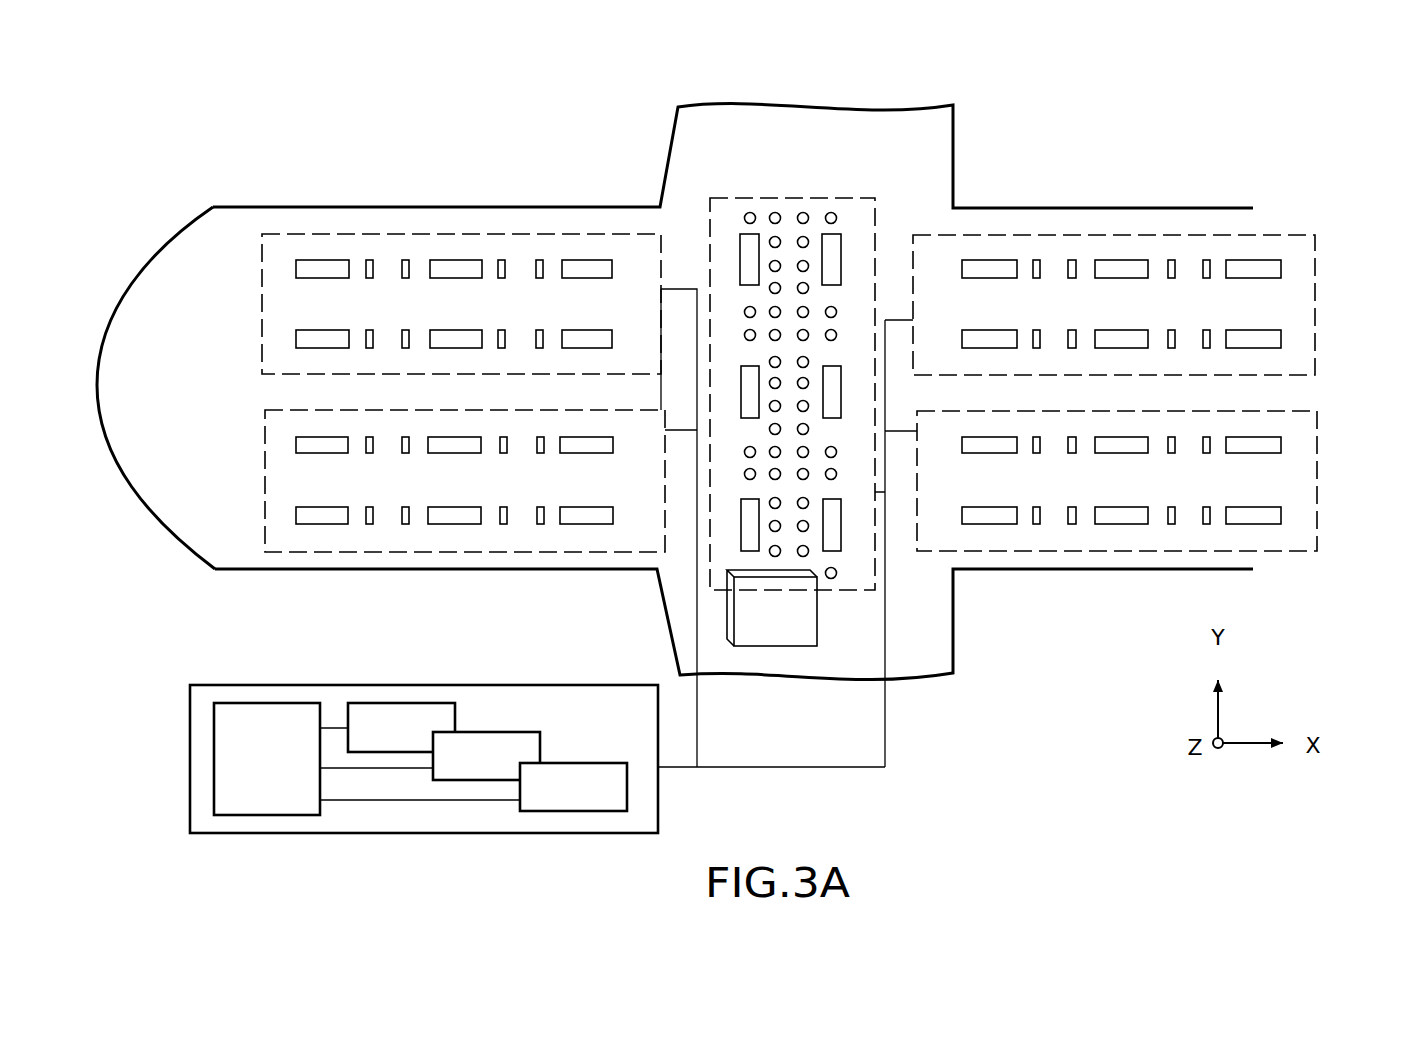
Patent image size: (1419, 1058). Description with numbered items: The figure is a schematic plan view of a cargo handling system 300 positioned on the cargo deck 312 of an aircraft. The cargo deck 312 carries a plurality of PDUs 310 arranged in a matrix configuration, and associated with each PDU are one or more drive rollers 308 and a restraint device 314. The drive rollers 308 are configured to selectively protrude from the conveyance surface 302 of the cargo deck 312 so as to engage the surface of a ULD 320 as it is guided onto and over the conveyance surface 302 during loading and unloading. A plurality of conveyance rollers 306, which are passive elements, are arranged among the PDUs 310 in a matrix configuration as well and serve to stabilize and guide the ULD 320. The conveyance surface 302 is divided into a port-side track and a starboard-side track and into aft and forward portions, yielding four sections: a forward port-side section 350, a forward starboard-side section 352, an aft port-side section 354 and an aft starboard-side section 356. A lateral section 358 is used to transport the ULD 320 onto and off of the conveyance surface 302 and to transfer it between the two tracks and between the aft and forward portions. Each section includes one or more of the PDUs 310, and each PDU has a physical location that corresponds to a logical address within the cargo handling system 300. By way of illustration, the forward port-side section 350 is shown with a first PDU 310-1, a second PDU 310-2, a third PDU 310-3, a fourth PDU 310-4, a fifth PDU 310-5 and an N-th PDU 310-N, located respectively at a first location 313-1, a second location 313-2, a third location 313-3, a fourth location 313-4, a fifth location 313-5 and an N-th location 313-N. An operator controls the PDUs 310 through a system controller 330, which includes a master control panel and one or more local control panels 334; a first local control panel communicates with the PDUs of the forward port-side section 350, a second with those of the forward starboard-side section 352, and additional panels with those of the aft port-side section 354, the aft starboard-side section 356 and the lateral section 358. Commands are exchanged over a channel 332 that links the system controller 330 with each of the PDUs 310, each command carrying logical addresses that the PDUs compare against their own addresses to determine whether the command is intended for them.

The cargo handling system 300 is at (245, 122).
The conveyance surface 302 is at (968, 318).
The conveyance rollers 306 is at (1207, 267).
The drive rollers 308 is at (608, 265).
The PDUs 310 is at (372, 212).
The first PDU 310-1 is at (310, 437).
The second PDU 310-2 is at (445, 437).
The third PDU 310-3 is at (565, 437).
The fourth PDU 310-4 is at (345, 524).
The fifth PDU 310-5 is at (478, 524).
The N-th PDU 310-N is at (595, 524).
The cargo deck 312 is at (520, 267).
The first location 313-1 is at (354, 459).
The second location 313-2 is at (490, 459).
The third location 313-3 is at (600, 434).
The fourth location 313-4 is at (357, 529).
The fifth location 313-5 is at (490, 529).
The N-th location 313-N is at (617, 504).
The restraint device 314 is at (594, 250).
The ULD 320 is at (755, 637).
The system controller 330 is at (521, 781).
The channel 332 is at (278, 815).
The local control panels 334 is at (455, 720).
The forward port-side section 350 is at (265, 475).
The forward starboard-side section 352 is at (262, 320).
The aft port-side section 354 is at (1316, 465).
The aft starboard-side section 356 is at (1316, 312).
The lateral section 358 is at (710, 198).